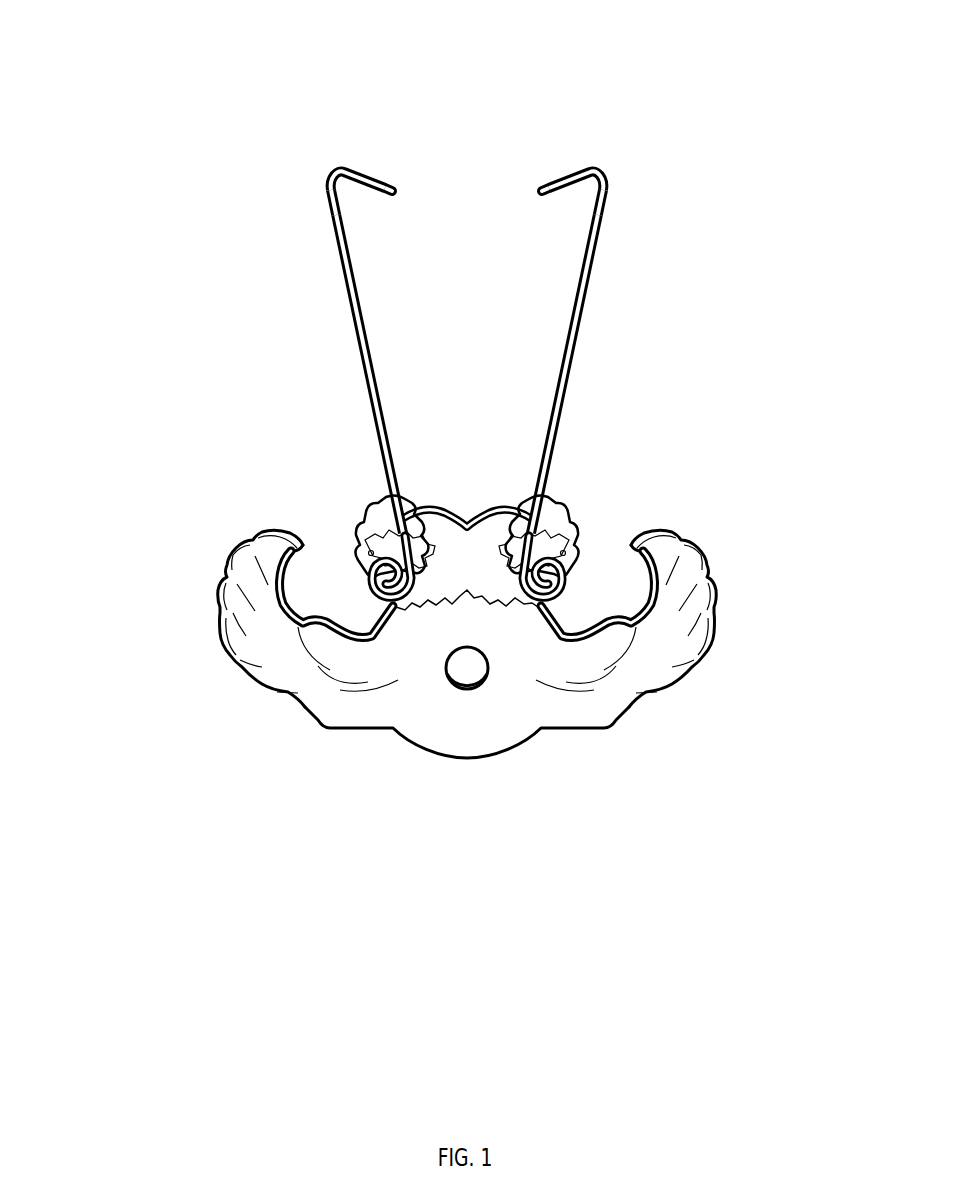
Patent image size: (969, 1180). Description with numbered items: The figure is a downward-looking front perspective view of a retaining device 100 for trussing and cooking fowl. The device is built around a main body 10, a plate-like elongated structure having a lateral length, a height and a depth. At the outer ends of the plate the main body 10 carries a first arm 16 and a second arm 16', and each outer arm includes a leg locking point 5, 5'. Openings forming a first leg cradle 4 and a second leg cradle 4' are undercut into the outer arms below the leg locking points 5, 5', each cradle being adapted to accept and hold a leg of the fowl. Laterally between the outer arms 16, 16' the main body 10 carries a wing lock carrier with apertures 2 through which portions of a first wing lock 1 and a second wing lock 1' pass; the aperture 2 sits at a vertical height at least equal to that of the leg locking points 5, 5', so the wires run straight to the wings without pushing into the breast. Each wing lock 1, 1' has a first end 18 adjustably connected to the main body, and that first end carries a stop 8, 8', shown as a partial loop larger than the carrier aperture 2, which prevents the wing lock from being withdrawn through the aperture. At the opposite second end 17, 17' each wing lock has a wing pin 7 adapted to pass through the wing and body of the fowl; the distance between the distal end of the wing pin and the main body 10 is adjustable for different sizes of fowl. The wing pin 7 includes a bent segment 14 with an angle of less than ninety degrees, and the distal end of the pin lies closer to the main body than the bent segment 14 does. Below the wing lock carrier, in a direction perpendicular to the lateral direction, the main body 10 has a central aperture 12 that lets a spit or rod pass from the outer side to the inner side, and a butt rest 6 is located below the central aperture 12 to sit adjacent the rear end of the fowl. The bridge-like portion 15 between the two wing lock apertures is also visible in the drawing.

The retaining device 100 is at (181, 485).
The first wing lock 1 is at (276, 374).
The second wing lock 1' is at (662, 374).
The bent segment 14 is at (582, 157).
The second end of first wing lock 17 is at (238, 123).
The second end of second wing lock 17' is at (698, 123).
The wing pin 7 is at (522, 210).
The wing lock carrier aperture 2 is at (519, 521).
The arched bridge 15 is at (467, 501).
The first end of wing lock 18 is at (504, 580).
The leg locking point 5 is at (298, 479).
The leg locking point 5' is at (636, 479).
The first arm 16 is at (182, 618).
The second arm 16' is at (752, 618).
The first leg cradle 4 is at (235, 621).
The second leg cradle 4' is at (700, 621).
The stop 8 is at (321, 725).
The stop 8' is at (614, 725).
The main body 10 is at (249, 713).
The butt rest 6 is at (453, 773).
The central aperture 12 is at (480, 710).